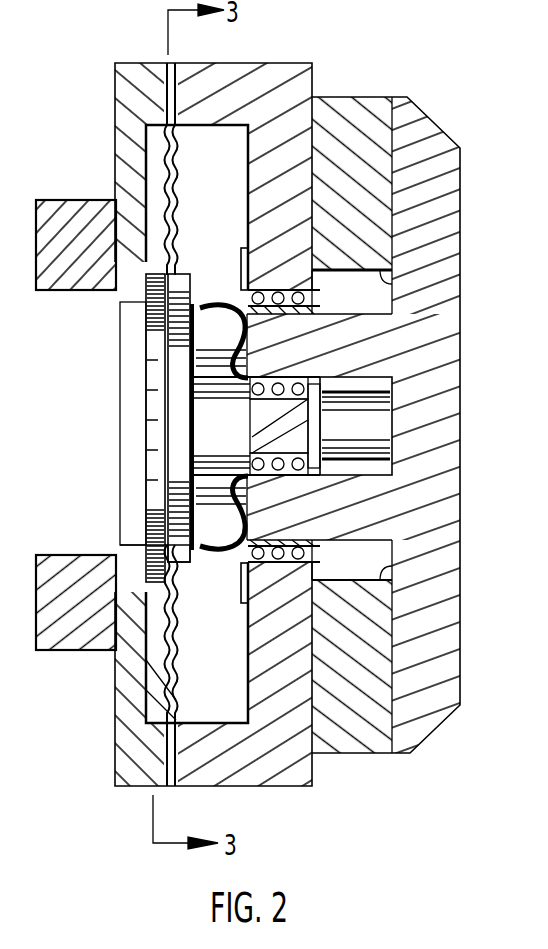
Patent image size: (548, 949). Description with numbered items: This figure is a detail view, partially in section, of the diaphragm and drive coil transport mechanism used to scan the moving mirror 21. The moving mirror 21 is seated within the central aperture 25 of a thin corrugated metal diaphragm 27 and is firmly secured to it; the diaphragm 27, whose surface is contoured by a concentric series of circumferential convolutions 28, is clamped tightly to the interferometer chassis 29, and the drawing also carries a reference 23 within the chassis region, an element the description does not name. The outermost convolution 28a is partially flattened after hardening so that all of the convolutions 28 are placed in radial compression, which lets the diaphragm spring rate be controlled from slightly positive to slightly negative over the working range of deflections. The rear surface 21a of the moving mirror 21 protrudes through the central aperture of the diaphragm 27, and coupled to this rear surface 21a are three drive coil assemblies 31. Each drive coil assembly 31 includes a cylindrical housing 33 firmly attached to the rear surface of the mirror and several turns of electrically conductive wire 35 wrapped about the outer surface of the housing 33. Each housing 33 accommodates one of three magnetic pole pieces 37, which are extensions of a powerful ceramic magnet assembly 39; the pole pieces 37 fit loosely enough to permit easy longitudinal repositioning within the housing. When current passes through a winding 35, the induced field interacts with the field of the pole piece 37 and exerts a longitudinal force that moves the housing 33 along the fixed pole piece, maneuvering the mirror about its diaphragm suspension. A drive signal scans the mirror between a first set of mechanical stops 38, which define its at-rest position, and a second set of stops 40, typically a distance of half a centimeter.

The moving mirror 21 is at (120, 460).
The rear surface of the moving mirror 21a is at (188, 565).
The chamber 23 is at (208, 128).
The central aperture 25 is at (148, 330).
The corrugated metal diaphragm 27 is at (166, 146).
The circumferential convolutions 28 is at (168, 666).
The outermost convolution 28a is at (170, 702).
The interferometer chassis 29 is at (312, 63).
The drive coil assembly 31 is at (232, 280).
The cylindrical housing 33 is at (208, 330).
The electrically conductive wire 35 is at (318, 300).
The magnetic pole piece 37 is at (392, 292).
The first set of mechanical stops 38 is at (110, 292).
The ceramic magnet assembly 39 is at (430, 121).
The second set of stops 40 is at (244, 248).